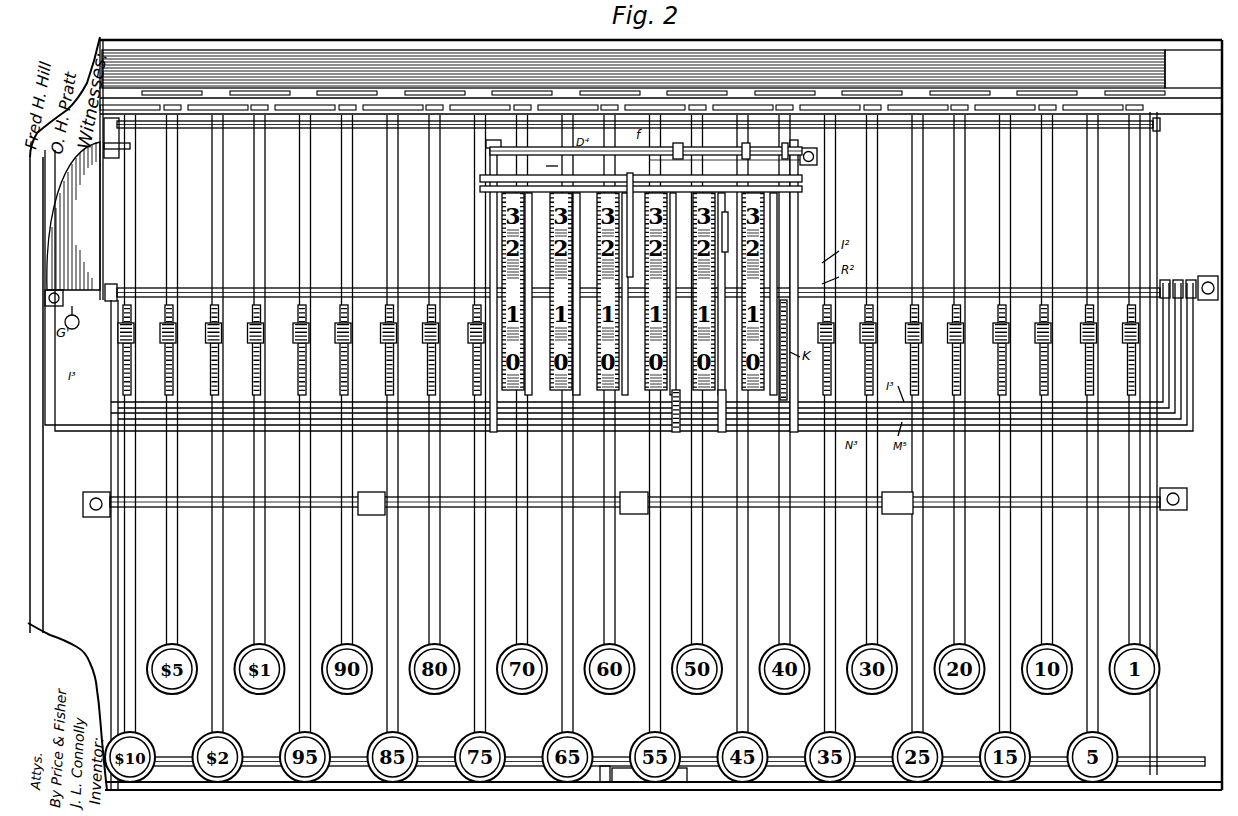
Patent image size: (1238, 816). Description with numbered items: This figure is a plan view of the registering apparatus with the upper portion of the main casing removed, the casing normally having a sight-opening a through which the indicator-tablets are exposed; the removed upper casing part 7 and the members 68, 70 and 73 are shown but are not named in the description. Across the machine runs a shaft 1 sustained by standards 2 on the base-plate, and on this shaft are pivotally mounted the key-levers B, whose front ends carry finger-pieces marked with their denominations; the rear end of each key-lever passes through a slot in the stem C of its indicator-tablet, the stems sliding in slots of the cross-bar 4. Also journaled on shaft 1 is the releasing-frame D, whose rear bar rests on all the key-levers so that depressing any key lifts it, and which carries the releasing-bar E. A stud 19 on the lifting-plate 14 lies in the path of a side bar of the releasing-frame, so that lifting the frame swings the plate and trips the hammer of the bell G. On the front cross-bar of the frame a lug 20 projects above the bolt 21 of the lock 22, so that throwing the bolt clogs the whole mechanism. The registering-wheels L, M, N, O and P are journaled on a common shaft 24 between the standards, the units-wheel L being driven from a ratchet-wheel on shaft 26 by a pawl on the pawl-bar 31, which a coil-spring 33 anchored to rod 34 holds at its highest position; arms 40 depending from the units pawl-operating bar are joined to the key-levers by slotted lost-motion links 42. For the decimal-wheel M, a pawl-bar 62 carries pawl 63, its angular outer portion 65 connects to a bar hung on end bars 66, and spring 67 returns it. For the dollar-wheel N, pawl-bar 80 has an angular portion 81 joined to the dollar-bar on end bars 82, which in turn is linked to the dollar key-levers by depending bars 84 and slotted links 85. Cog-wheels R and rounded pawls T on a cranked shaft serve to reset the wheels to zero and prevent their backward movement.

The shaft 1 is at (540, 506).
The standards 2 is at (95, 497).
The cross-bar 4 is at (1170, 112).
The top casing panel 7 is at (1160, 84).
The lifting-plate 14 is at (104, 128).
The stud or pin 19 is at (130, 147).
The lug or stud 20 is at (614, 766).
The bolt 21 is at (603, 765).
The lock 22 is at (688, 764).
The common shaft 24 is at (480, 290).
The shaft 26 is at (1150, 282).
The pawl bar or lever 31 is at (790, 380).
The coil-spring 33 is at (646, 143).
The rod 34 is at (612, 168).
The arms 40 is at (730, 350).
The lost-motion links or connections 42 is at (1020, 290).
The pawl bar or lever 62 is at (753, 135).
The pawl 63 is at (728, 226).
The outer portion of pawl-bar 65 is at (727, 398).
The end bars 66 is at (115, 398).
The coil-spring 67 is at (738, 147).
The racks 68 is at (679, 350).
The pawl 70 is at (868, 324).
The rail 73 is at (1186, 323).
The pawl-bar 80 is at (694, 171).
The angular portion 81 is at (680, 398).
The end bars 82 is at (108, 352).
The depending bars 84 is at (191, 350).
The links or lost-motion connections 85 is at (646, 332).
The key-levers B is at (633, 424).
The stem C is at (1168, 94).
The releasing-frame D is at (601, 552).
The releasing-bar E is at (641, 175).
The bell or gong G is at (73, 216).
The sight-opening a is at (655, 752).
The cog-wheels R is at (546, 310).
The registering-wheel P is at (561, 291).
The registering-wheel O is at (608, 291).
The dollar-wheel N is at (656, 291).
The decimal-wheel M is at (711, 291).
The units-wheel L is at (753, 291).
The pawls T is at (592, 297).